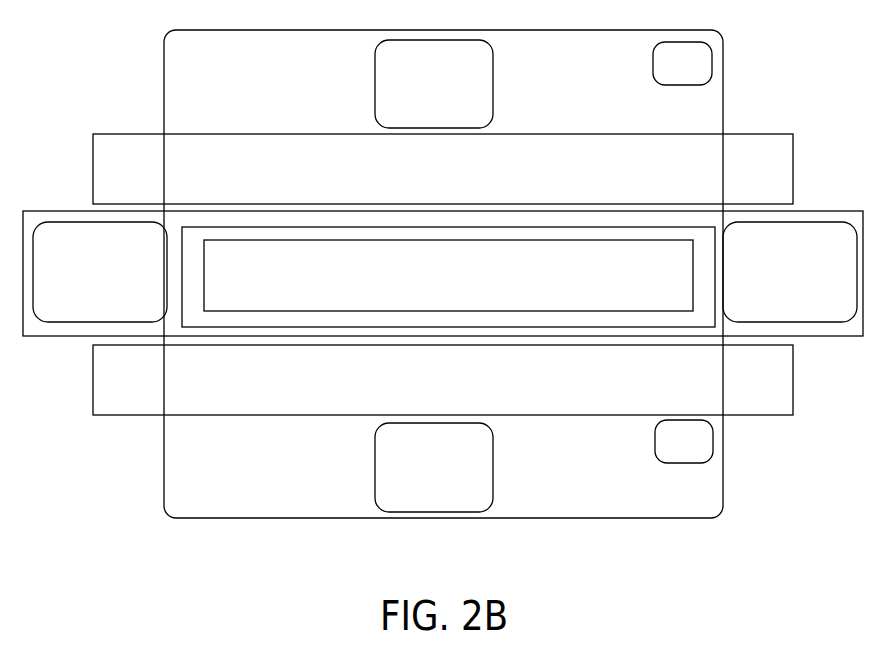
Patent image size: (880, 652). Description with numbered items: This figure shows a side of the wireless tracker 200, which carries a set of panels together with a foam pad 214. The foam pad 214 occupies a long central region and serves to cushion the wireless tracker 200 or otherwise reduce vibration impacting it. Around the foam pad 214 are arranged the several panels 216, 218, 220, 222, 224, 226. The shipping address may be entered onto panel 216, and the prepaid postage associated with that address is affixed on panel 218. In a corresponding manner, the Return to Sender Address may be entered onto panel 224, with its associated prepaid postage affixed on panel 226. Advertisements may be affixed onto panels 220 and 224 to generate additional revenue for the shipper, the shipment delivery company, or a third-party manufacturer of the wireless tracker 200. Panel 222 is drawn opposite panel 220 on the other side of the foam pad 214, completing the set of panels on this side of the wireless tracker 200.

The wireless tracker 200 is at (723, 448).
The foam pad 214 is at (447, 225).
The panel 216 is at (434, 84).
The panel 218 is at (682, 63).
The panel 220 is at (100, 272).
The panel 222 is at (790, 272).
The panel 224 is at (434, 467).
The panel 226 is at (684, 441).